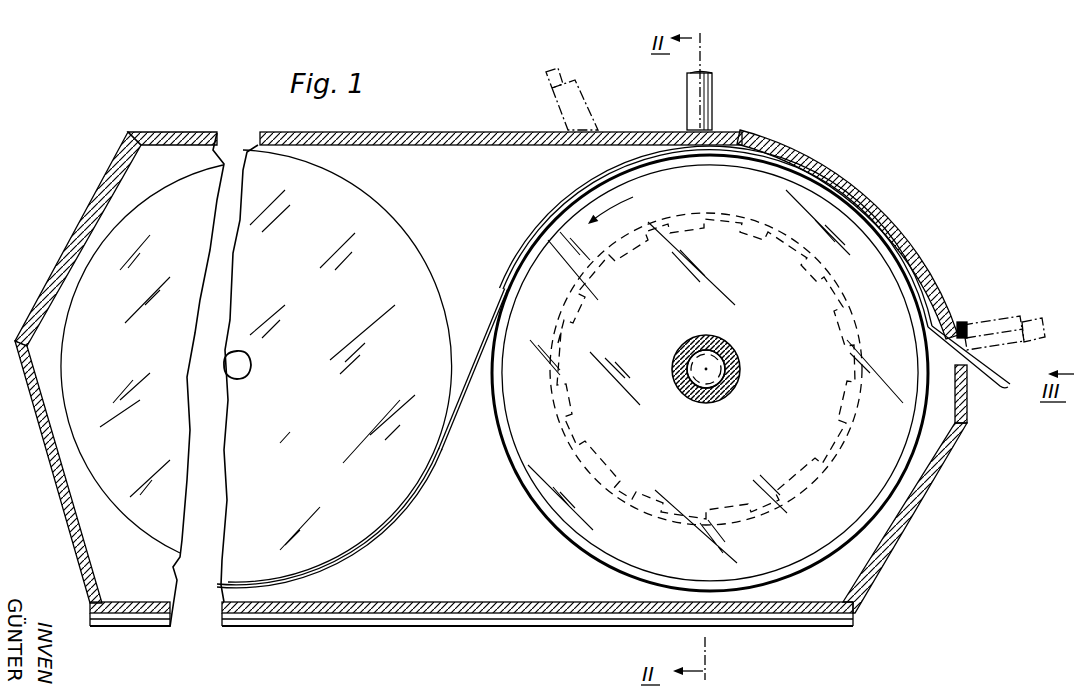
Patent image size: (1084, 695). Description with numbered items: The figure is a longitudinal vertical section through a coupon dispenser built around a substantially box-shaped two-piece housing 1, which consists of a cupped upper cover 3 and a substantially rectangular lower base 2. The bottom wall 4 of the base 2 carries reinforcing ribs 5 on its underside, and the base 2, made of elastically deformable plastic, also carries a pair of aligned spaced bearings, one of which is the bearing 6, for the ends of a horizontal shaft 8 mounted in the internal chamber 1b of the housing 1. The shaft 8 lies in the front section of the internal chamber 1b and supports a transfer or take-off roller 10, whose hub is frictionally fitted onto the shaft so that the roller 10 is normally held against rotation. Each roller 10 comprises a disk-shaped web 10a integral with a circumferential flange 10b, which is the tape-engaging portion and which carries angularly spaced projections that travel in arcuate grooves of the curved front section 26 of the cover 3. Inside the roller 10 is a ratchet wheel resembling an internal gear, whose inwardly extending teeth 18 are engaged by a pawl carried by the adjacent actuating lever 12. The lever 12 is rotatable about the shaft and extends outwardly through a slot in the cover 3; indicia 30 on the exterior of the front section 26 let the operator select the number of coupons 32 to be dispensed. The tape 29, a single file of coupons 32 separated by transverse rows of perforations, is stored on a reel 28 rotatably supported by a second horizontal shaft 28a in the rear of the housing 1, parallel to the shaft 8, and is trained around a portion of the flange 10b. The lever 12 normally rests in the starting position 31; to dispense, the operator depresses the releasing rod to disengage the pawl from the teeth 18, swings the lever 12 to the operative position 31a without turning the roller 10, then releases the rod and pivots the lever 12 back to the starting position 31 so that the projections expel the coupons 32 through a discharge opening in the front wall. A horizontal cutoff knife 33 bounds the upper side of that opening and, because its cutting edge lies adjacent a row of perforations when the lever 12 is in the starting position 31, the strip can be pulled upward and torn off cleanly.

The housing 1 is at (151, 130).
The internal chamber 1b is at (463, 185).
The base 2 is at (36, 423).
The cover 3 is at (66, 250).
The bottom wall 4 is at (325, 613).
The reinforcing ribs 5 is at (135, 617).
The bearing 6 is at (729, 392).
The shaft 8 is at (688, 377).
The transfer roller 10 is at (551, 534).
The web 10a is at (818, 556).
The circumferential flange 10b is at (716, 582).
The actuating lever 12 is at (718, 106).
The tooth 18 is at (631, 257).
The curved front section 26 is at (820, 163).
The reel 28 is at (297, 163).
The second horizontal shaft 28a is at (249, 374).
The tape 29 is at (457, 390).
The indicia 30 is at (892, 221).
The starting position 31 is at (995, 322).
The operative position 31a is at (560, 80).
The coupon 32 is at (991, 382).
The cutoff knife 33 is at (995, 353).